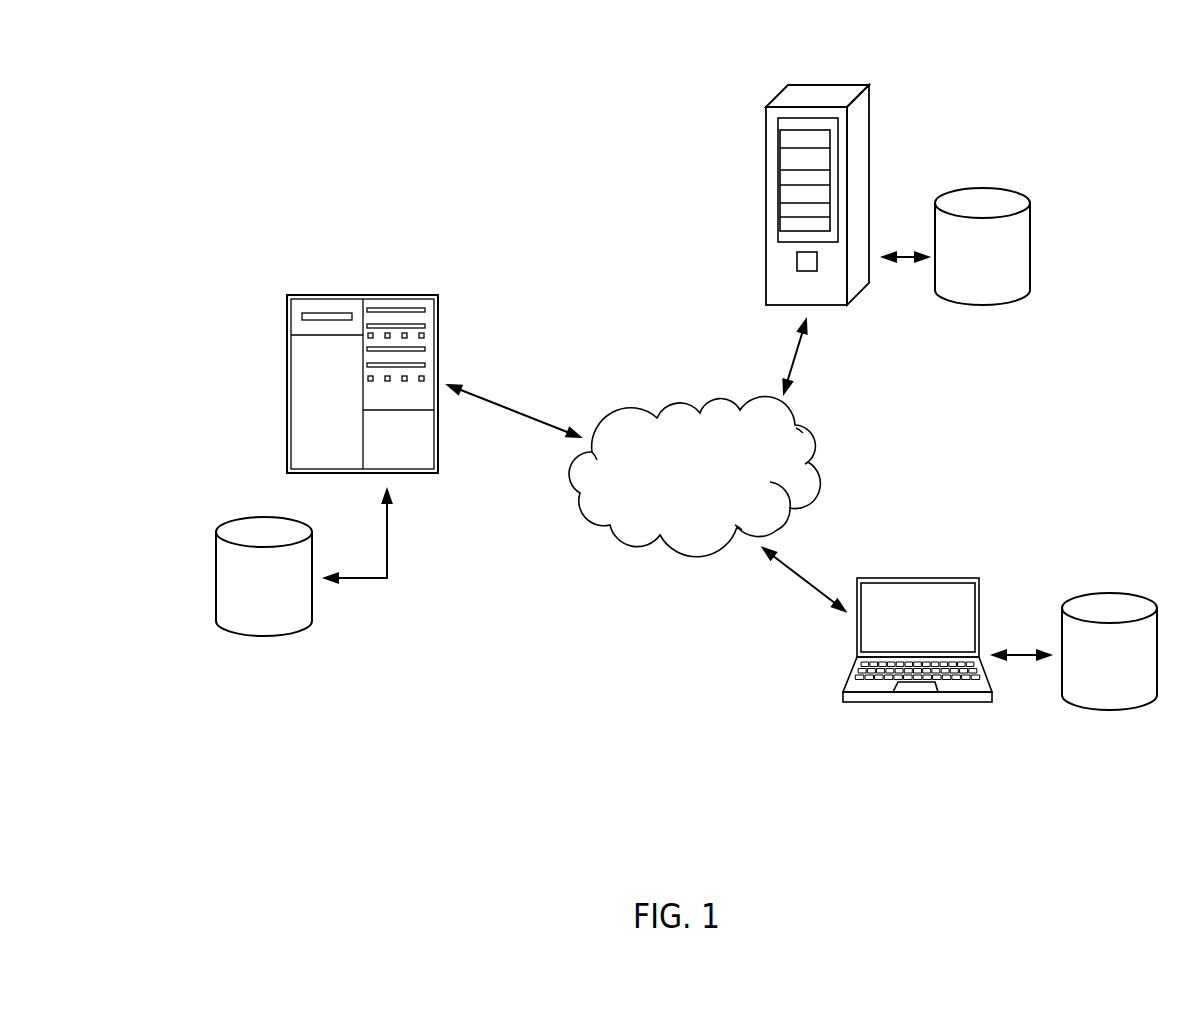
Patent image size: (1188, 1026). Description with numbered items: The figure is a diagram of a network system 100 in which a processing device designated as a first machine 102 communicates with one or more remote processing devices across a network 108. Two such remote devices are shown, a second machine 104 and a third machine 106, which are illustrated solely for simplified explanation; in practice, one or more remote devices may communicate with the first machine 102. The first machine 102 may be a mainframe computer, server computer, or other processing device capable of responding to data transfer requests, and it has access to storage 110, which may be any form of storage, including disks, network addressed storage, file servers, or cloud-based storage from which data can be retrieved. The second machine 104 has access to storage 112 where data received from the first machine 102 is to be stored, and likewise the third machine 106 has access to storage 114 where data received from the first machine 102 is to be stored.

The network system 100 is at (1100, 68).
The first machine 102 is at (355, 295).
The second machine 104 is at (765, 160).
The third machine 106 is at (943, 578).
The network 108 is at (631, 545).
The storage 110 is at (215, 590).
The storage 112 is at (1030, 252).
The storage 114 is at (1118, 710).